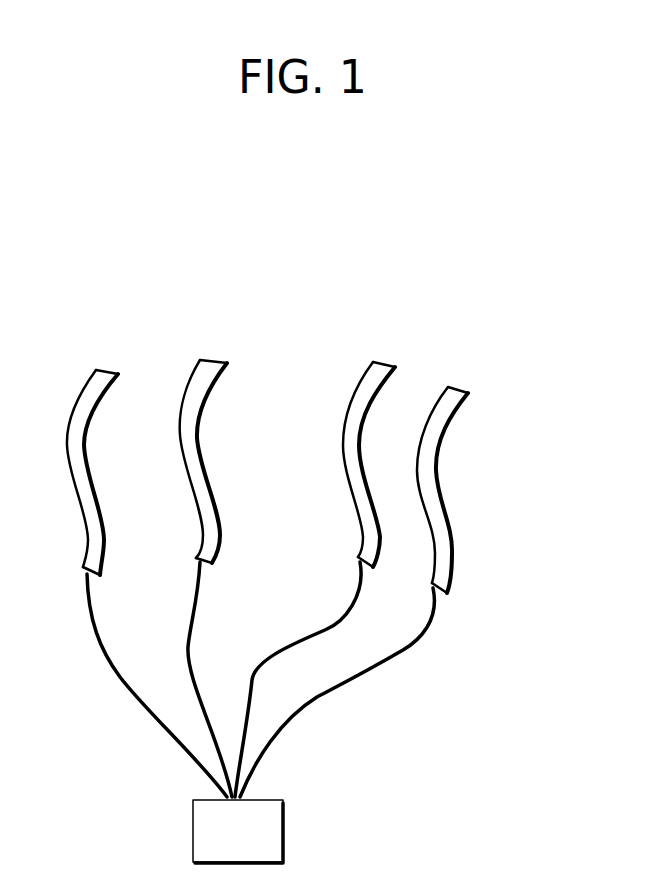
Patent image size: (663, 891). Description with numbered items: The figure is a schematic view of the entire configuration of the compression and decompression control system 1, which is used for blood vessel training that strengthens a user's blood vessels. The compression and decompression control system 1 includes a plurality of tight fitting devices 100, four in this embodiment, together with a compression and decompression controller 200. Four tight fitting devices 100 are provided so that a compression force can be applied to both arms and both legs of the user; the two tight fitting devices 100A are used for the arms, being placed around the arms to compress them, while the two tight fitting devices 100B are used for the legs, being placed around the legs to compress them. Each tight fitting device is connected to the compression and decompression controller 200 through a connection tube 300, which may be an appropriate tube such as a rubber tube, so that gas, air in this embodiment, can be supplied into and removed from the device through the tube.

The compression and decompression control system 1 is at (395, 782).
The tight fitting devices 100 is at (556, 308).
The tight fitting devices for arms 100A is at (109, 371).
The tight fitting devices for legs 100B is at (383, 363).
The compression and decompression controller 200 is at (268, 800).
The connection tube 300 is at (120, 677).